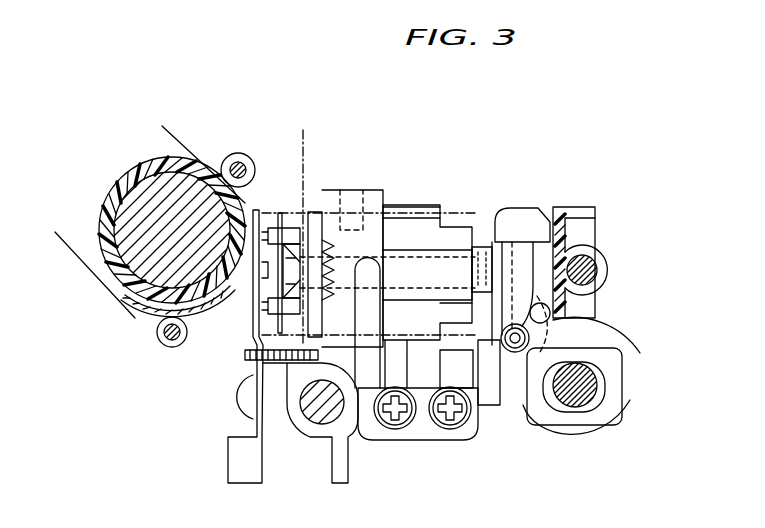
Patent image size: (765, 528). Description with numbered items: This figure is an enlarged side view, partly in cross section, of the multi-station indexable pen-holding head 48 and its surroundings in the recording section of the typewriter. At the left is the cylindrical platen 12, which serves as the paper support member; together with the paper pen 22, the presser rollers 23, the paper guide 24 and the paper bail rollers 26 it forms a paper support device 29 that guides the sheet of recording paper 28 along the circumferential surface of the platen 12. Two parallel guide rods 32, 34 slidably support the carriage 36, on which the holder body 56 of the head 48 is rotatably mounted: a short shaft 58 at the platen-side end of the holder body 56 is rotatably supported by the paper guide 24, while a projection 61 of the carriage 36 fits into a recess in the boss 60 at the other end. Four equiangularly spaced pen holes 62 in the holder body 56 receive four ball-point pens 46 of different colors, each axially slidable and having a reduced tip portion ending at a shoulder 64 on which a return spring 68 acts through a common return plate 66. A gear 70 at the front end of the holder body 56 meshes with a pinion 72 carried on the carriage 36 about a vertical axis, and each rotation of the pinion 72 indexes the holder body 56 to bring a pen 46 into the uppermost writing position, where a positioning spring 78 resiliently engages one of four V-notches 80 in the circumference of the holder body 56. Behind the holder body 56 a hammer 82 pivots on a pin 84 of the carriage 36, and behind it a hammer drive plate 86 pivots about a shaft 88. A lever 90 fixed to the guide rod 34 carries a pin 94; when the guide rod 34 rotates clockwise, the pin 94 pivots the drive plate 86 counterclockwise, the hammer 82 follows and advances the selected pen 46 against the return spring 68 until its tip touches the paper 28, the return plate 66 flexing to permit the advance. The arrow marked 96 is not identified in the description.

The platen 12 is at (137, 178).
The paper pen 22 is at (137, 310).
The presser rollers 23 is at (163, 345).
The paper guide 24 is at (254, 318).
The paper bail rollers 26 is at (238, 152).
The sheet of recording paper 28 is at (180, 140).
The paper support device 29 is at (216, 107).
The guide rod 32 is at (316, 414).
The guide rod 34 is at (587, 398).
The carriage 36 is at (505, 400).
The ball-point pen 46 is at (454, 215).
The pen-holding head 48 is at (432, 158).
The holder body 56 is at (377, 190).
The short shaft 58 is at (262, 292).
The boss 60 is at (484, 208).
The projection 61 is at (497, 240).
The pen holes 62 is at (348, 212).
The shoulder 64 is at (368, 227).
The return plate 66 is at (292, 226).
The return spring 68 is at (300, 220).
The gear 70 is at (327, 212).
The pinion 72 is at (238, 361).
The positioning spring 78 is at (361, 395).
The V-notches 80 is at (396, 228).
The hammer 82 is at (520, 208).
The pin 84 is at (516, 353).
The hammer drive plate 86 is at (583, 213).
The shaft 88 is at (598, 265).
The lever 90 is at (583, 333).
The pin 94 is at (600, 345).
The pivoting direction 96 is at (623, 214).